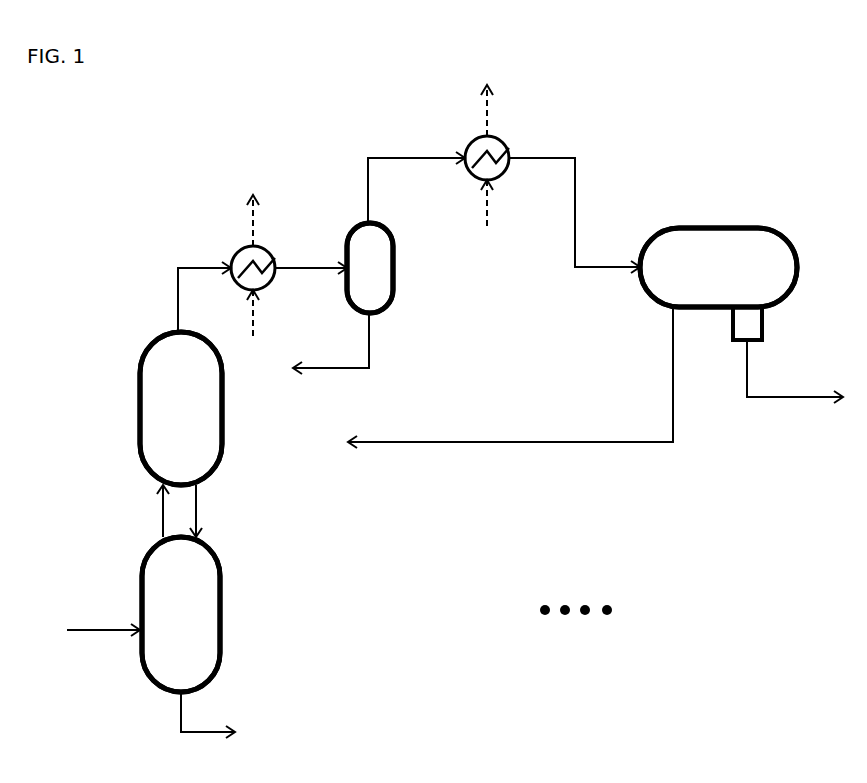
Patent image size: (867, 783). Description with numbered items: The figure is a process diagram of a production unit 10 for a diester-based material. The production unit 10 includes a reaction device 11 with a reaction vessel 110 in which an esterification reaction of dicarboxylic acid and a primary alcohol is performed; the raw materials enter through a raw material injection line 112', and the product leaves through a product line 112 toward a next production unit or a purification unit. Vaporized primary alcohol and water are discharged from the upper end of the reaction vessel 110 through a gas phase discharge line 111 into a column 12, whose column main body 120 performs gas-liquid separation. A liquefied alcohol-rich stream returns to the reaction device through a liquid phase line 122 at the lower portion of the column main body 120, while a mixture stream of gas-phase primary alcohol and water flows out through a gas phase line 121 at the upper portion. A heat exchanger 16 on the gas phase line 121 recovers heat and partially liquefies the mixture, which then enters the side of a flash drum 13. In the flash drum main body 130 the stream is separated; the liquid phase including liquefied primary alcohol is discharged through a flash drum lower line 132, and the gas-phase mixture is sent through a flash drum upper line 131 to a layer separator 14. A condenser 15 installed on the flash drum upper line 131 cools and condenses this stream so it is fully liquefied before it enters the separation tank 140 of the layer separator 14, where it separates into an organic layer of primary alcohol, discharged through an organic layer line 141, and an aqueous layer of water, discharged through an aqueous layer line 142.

The production unit 10 is at (163, 135).
The reaction device 11 is at (181, 614).
The column 12 is at (181, 408).
The flash drum 13 is at (370, 268).
The layer separator 14 is at (718, 284).
The condenser 15 is at (496, 156).
The heat exchanger 16 is at (238, 250).
The reaction vessel 110 is at (140, 613).
The gas phase discharge line 111 is at (141, 511).
The product line 112 is at (207, 729).
The raw material injection line 112' is at (103, 643).
The column main body 120 is at (140, 417).
The gas phase line 121 is at (238, 297).
The liquid phase line 122 is at (220, 511).
The flash drum main body 130 is at (342, 247).
The flash drum upper line 131 is at (481, 212).
The flash drum lower line 132 is at (354, 343).
The separation tank 140 is at (717, 226).
The organic layer line 141 is at (510, 377).
The aqueous layer line 142 is at (795, 371).